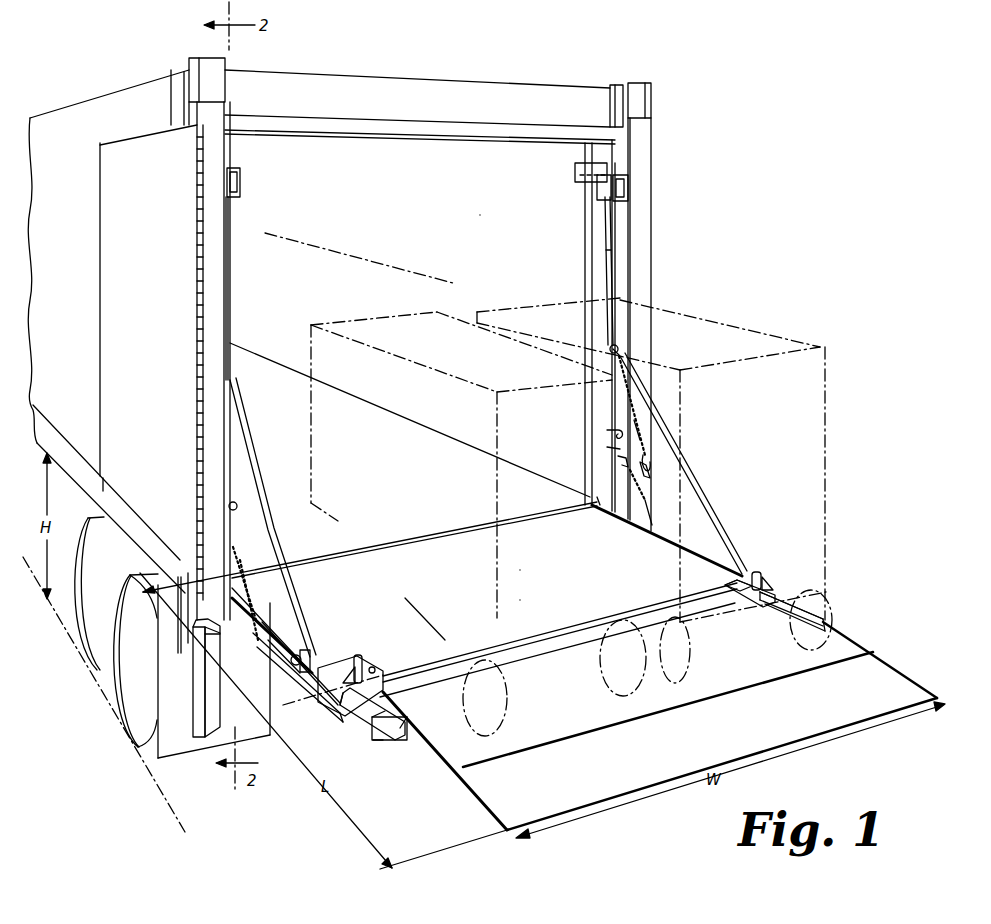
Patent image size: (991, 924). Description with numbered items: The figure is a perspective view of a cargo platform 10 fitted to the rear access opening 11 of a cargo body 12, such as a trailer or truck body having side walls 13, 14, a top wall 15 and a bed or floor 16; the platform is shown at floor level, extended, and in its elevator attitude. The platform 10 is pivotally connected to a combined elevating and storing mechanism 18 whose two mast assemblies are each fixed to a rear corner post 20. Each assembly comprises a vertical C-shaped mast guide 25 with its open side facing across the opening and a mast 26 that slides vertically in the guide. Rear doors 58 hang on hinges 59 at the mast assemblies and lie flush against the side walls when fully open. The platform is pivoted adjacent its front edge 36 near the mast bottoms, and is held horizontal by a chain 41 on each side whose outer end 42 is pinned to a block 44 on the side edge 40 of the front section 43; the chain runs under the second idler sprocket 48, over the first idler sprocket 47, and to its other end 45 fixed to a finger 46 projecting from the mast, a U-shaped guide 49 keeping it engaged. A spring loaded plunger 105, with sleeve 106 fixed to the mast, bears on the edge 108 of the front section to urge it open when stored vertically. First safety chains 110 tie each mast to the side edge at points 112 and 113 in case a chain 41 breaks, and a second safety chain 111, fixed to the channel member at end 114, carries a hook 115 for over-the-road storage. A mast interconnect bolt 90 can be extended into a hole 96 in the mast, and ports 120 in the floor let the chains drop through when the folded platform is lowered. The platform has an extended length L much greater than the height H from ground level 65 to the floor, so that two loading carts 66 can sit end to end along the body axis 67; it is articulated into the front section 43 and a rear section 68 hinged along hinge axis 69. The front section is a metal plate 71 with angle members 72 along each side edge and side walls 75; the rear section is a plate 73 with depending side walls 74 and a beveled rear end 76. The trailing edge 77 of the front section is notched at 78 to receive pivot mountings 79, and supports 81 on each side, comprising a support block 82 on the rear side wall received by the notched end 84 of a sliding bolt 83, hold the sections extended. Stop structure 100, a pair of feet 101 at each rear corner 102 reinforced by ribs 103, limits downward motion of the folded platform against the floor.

The cargo platform 10 is at (762, 520).
The rear access opening 11 is at (626, 141).
The cargo body 12 is at (80, 114).
The side wall 13 is at (56, 280).
The side wall 14 is at (495, 201).
The top wall 15 is at (300, 70).
The bed or floor 16 is at (461, 465).
The elevating and storing mechanism 18 is at (243, 232).
The rear corner post 20 is at (166, 568).
The mast guide 25 is at (220, 298).
The mast 26 is at (624, 293).
The front edge 36 is at (414, 540).
The side edge 40 is at (630, 518).
The chain 41 is at (246, 432).
The outer end 42 is at (296, 662).
The front section 43 is at (530, 590).
The block 44 is at (298, 674).
The other end 45 is at (597, 188).
The finger 46 is at (575, 172).
The first idler sprocket 47 is at (629, 182).
The second idler sprocket 48 is at (618, 347).
The U-shaped guide 49 is at (240, 172).
The rear door 58 is at (100, 176).
The hinge 59 is at (197, 268).
The ground level 65 is at (104, 674).
The loading cart 66 is at (830, 345).
The axis 67 is at (352, 250).
The rear section 68 is at (742, 742).
The hinge axis 69 is at (444, 640).
The metal plate 71 is at (530, 559).
The angle member 72 is at (314, 700).
The plate 73 is at (658, 780).
The side wall 74 is at (430, 745).
The side wall 75 is at (263, 598).
The rear end 76 is at (672, 803).
The trailing edge 77 is at (560, 640).
The notch 78 is at (367, 668).
The pivot mounting 79 is at (376, 672).
The support 81 is at (369, 762).
The support block 82 is at (400, 740).
The bolt 83 is at (365, 715).
The notched end 84 is at (374, 745).
The mast interconnect bolt 90 is at (293, 652).
The hole 96 is at (606, 431).
The stop structure 100 is at (366, 652).
The foot 101 is at (743, 576).
The rear corner 102 is at (775, 585).
The rib 103 is at (777, 583).
The spring loaded plunger 105 is at (600, 448).
The sleeve 106 is at (242, 500).
The edge 108 is at (288, 650).
The first safety chain 110 is at (236, 552).
The second safety chain 111 is at (655, 438).
The connection point 112 is at (260, 626).
The connection point 113 is at (617, 460).
The end 114 is at (655, 415).
The hook 115 is at (680, 455).
The port 120 is at (583, 497).